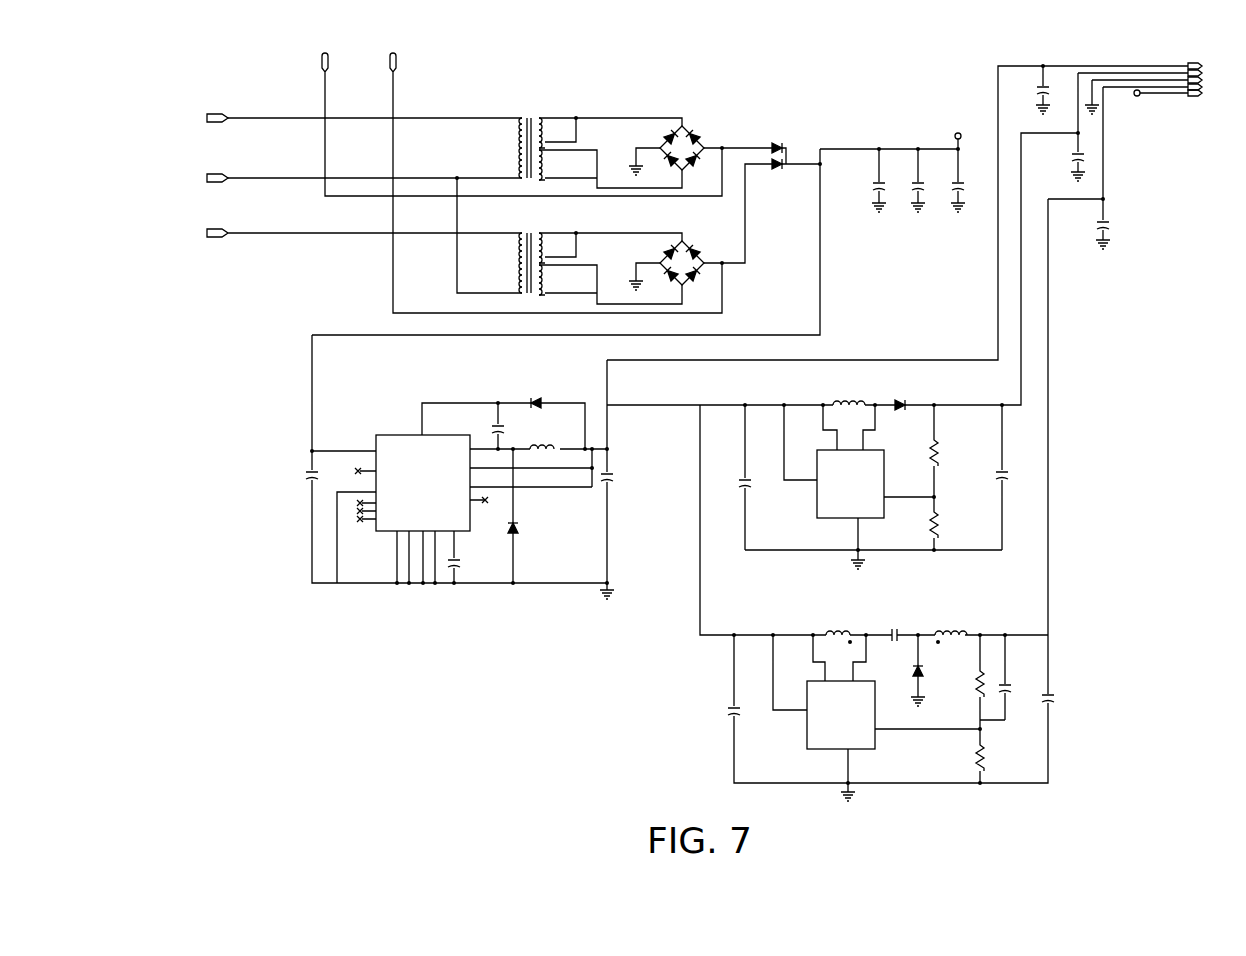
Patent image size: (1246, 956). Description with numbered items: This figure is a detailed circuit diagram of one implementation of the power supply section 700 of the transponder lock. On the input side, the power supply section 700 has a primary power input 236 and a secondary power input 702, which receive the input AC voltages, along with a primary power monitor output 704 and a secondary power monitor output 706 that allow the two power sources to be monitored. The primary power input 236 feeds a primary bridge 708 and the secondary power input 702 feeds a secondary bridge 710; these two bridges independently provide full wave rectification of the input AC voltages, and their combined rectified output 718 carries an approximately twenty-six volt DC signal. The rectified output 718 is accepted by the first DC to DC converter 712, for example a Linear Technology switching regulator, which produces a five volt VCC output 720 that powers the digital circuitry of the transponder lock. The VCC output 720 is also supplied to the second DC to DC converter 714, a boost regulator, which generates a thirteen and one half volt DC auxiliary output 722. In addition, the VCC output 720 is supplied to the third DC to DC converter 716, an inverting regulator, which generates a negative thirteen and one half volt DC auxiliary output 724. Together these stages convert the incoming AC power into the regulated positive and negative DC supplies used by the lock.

The power supply section 700 is at (504, 724).
The primary power input 236 is at (230, 117).
The secondary power input 702 is at (300, 236).
The primary power monitor output 704 is at (327, 83).
The secondary power monitor output 706 is at (395, 84).
The primary bridge 708 is at (718, 80).
The secondary bridge 710 is at (700, 212).
The first DC to DC converter 712 is at (395, 403).
The second DC to DC converter 714 is at (817, 491).
The third DC to DC converter 716 is at (807, 724).
The rectified output 718 is at (837, 149).
The VCC output 720 is at (870, 360).
The auxiliary output 722 is at (955, 405).
The negative auxiliary output 724 is at (1048, 578).